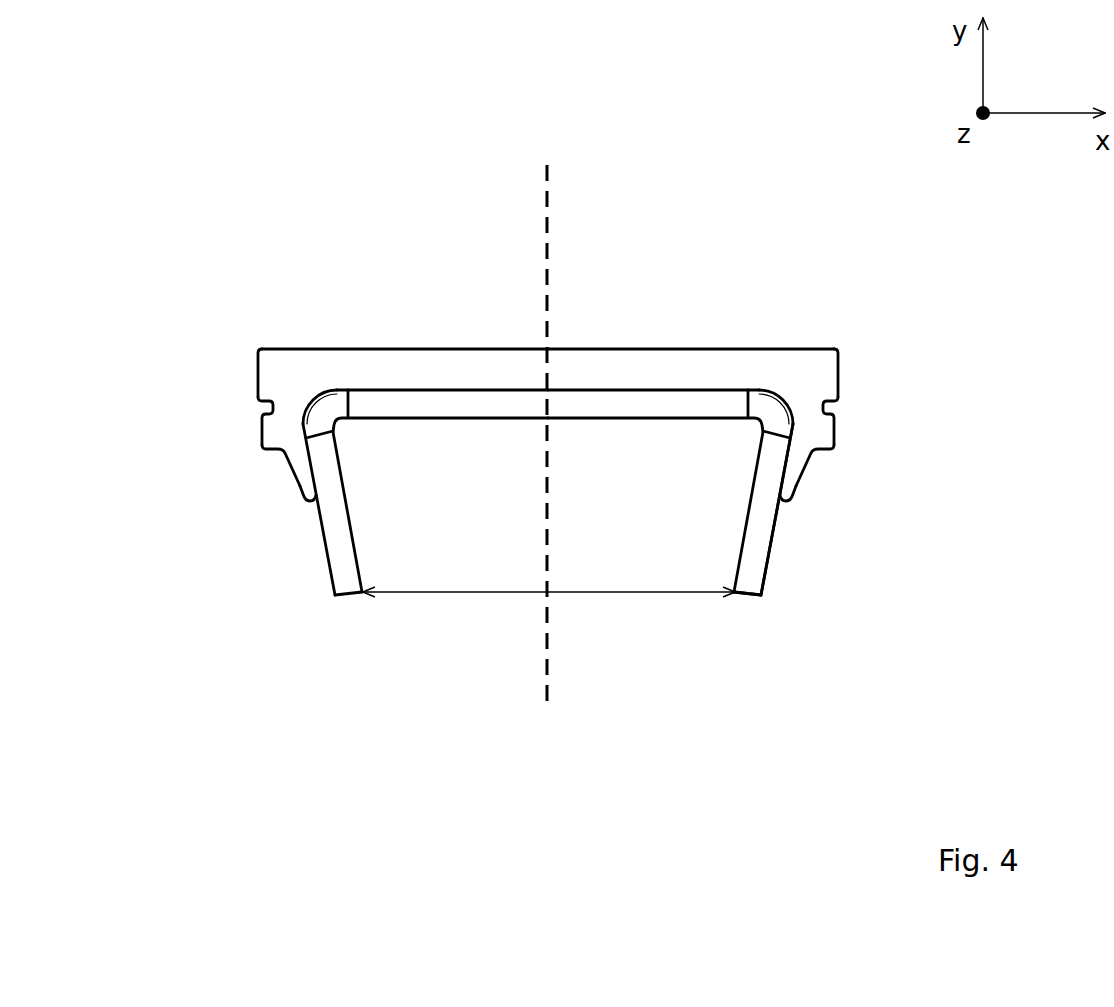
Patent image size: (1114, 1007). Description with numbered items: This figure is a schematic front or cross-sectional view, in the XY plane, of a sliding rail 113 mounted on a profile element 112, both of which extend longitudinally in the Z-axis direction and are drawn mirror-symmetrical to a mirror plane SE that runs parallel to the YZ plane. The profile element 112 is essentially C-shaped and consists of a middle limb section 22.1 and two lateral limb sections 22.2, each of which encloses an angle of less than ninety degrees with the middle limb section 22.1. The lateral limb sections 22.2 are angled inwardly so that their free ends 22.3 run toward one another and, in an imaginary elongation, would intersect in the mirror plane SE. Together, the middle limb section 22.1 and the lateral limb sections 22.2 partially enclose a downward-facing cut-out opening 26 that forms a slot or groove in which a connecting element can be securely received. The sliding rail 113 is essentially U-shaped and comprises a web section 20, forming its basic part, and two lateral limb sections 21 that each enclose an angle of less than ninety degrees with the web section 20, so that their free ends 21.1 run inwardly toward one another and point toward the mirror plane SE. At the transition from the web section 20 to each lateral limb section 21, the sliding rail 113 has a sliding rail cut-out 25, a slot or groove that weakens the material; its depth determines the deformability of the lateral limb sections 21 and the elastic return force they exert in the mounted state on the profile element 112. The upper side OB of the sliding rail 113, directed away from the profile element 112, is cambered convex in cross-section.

The web section 20 is at (608, 333).
The sliding rail 113 is at (410, 362).
The profile element 112 is at (765, 582).
The sliding rail cut-out 25 is at (255, 413).
The lateral limb section 21 is at (285, 477).
The free end 21.1 is at (302, 503).
The middle limb section 22.1 is at (463, 427).
The lateral limb section 22.2 is at (317, 573).
The free end 22.3 is at (350, 610).
The cut-out opening 26 is at (549, 612).
The mirror plane SE is at (544, 418).
The upper side OB is at (743, 343).